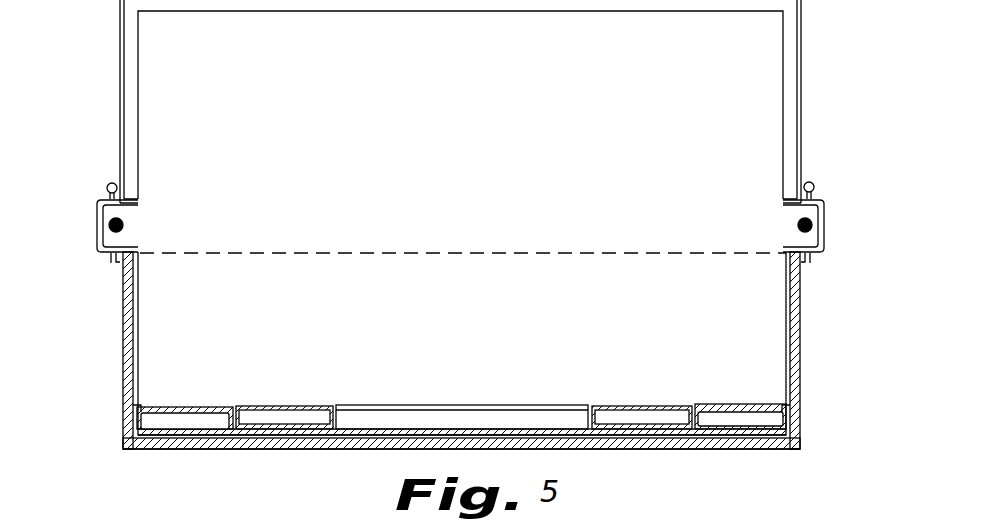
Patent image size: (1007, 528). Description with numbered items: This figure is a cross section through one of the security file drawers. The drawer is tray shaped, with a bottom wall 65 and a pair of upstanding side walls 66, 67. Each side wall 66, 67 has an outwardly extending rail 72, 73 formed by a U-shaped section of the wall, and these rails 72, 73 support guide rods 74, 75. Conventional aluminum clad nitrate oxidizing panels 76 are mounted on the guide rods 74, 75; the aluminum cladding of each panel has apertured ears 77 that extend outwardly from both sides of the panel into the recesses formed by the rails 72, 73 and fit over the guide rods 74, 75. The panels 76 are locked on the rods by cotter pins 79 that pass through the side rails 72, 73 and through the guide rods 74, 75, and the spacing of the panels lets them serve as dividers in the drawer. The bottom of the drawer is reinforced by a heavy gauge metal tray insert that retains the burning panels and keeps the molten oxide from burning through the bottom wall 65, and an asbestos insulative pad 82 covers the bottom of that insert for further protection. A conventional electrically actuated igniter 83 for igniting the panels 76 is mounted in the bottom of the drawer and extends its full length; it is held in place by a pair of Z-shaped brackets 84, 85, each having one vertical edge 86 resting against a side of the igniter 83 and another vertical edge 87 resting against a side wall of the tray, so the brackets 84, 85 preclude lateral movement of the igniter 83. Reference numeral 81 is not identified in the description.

The bottom wall 65 is at (461, 452).
The side wall 66 is at (123, 322).
The side wall 67 is at (803, 315).
The rail 72 is at (97, 228).
The rail 73 is at (828, 224).
The guide rod 74 is at (125, 226).
The guide rod 75 is at (797, 230).
The oxidizing panel 76 is at (458, 83).
The ear 77 is at (140, 211).
The cotter pin 79 is at (110, 184).
The bottom plate 81 is at (312, 449).
The asbestos insulative pad 82 is at (712, 437).
The igniter 83 is at (440, 412).
The Z-shaped bracket 84 is at (212, 406).
The Z-shaped bracket 85 is at (750, 404).
The vertical edge 86 is at (331, 407).
The vertical edge 87 is at (138, 407).